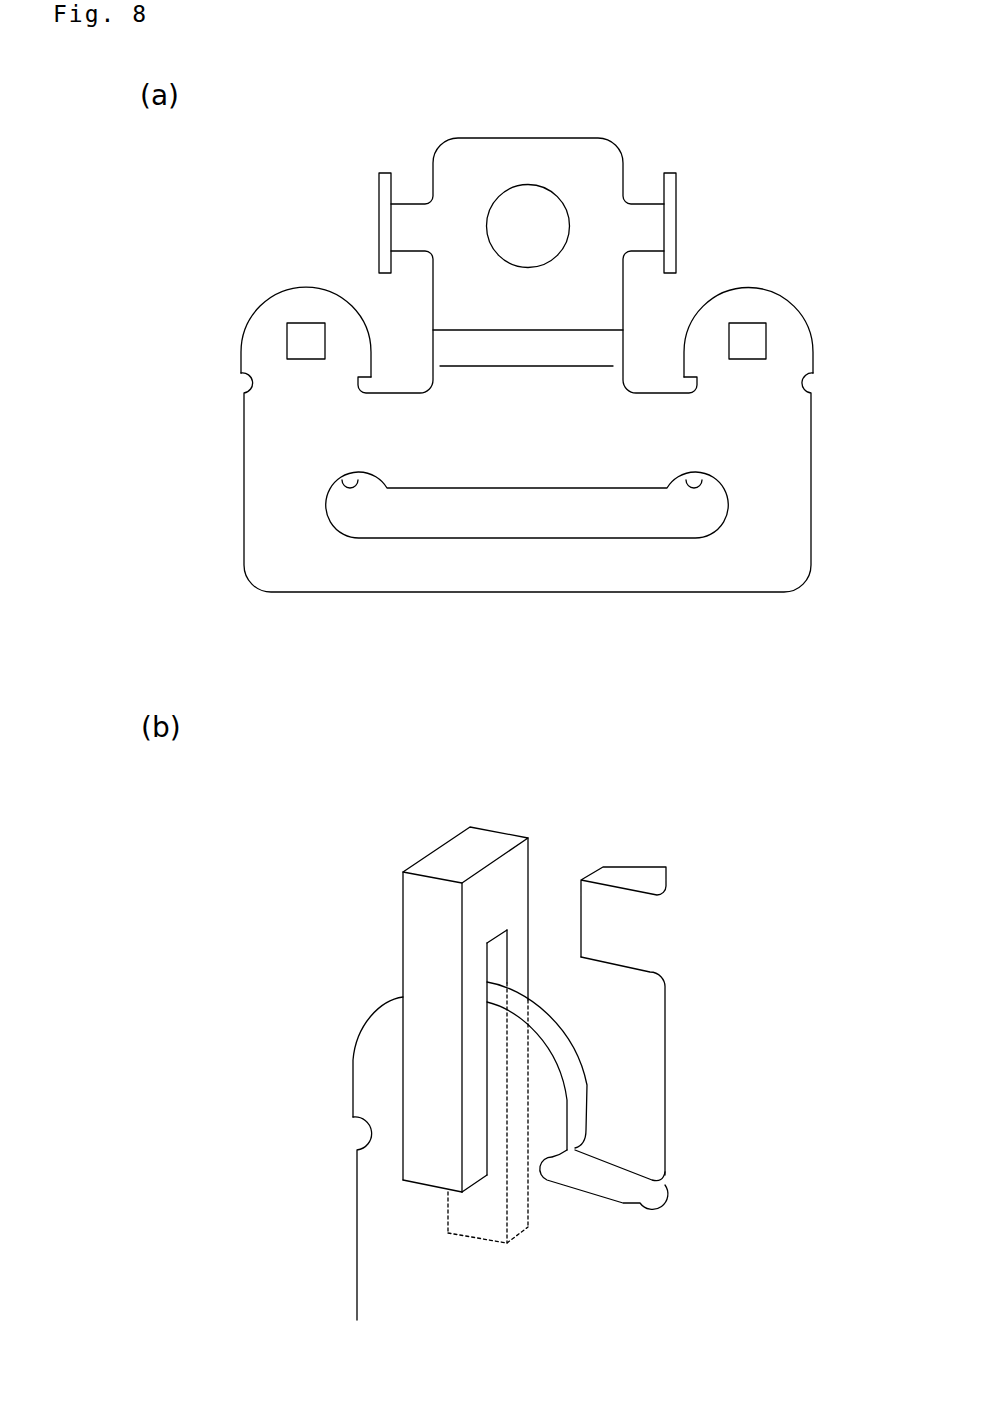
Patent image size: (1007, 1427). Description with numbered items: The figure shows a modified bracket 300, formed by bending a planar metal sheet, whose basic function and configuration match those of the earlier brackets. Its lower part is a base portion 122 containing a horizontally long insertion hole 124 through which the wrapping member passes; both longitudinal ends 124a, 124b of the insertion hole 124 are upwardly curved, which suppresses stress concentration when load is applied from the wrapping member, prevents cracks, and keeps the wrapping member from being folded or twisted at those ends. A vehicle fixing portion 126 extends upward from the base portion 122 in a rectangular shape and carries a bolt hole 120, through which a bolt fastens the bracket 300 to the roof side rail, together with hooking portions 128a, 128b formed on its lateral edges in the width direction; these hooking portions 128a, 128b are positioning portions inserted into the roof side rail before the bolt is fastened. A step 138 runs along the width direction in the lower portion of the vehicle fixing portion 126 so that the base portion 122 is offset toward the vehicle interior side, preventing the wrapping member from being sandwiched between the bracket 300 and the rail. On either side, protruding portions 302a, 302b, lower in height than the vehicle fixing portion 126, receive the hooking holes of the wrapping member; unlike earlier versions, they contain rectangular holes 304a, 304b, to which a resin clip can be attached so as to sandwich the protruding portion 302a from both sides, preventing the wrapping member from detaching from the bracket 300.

The bracket 300 is at (280, 176).
The bolt hole 120 is at (536, 186).
The base portion 122 is at (811, 535).
The insertion hole 124 is at (540, 538).
The end of insertion hole 124a is at (350, 473).
The end of insertion hole 124b is at (694, 473).
The vehicle fixing portion 126 is at (470, 148).
The hooking portion 128a is at (385, 172).
The hooking portion 128b is at (678, 178).
The step 138 is at (510, 352).
The protruding portion 302a is at (243, 314).
The protruding portion 302b is at (811, 314).
The hole 304a is at (315, 323).
The hole 304b is at (760, 323).